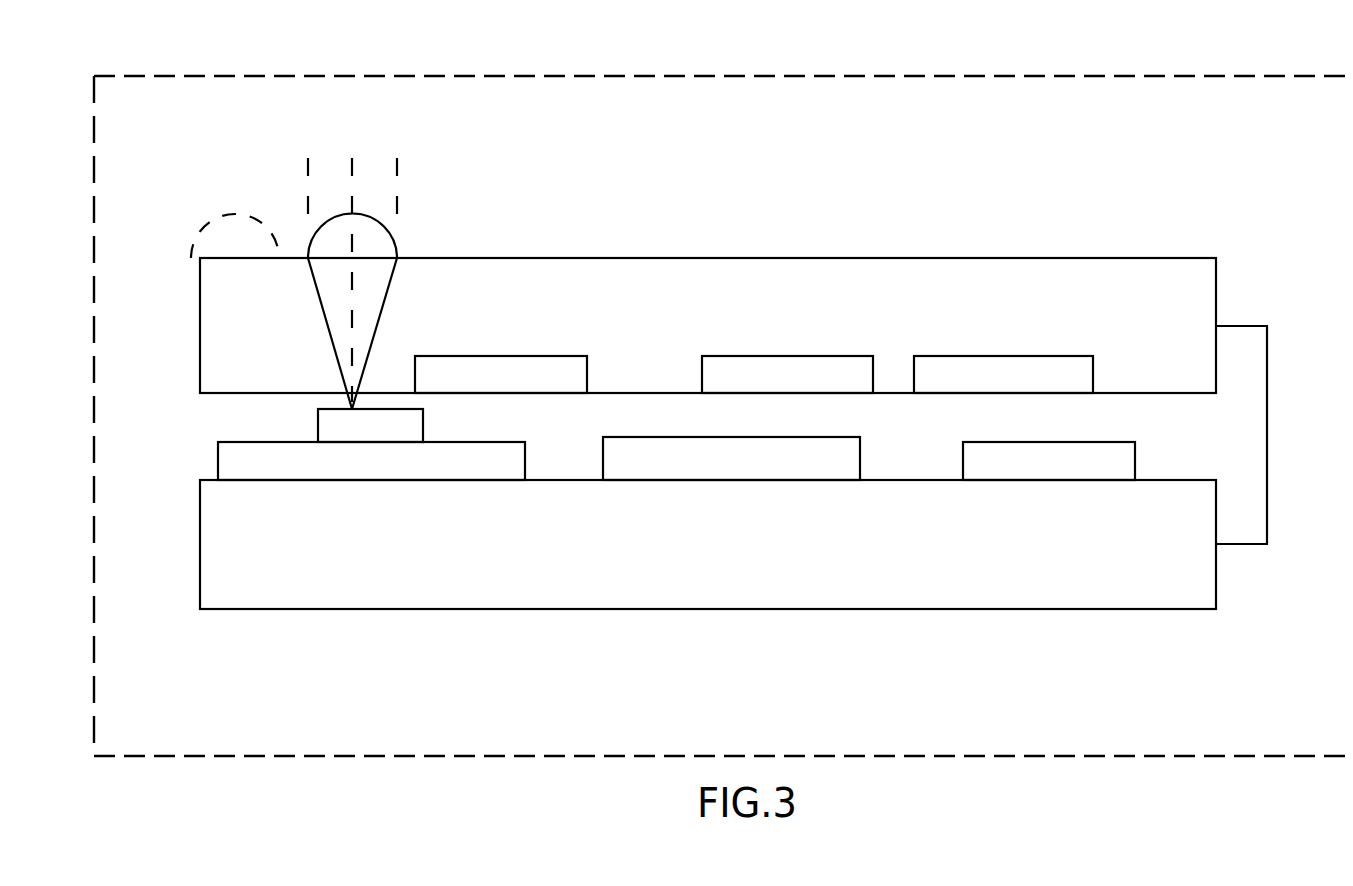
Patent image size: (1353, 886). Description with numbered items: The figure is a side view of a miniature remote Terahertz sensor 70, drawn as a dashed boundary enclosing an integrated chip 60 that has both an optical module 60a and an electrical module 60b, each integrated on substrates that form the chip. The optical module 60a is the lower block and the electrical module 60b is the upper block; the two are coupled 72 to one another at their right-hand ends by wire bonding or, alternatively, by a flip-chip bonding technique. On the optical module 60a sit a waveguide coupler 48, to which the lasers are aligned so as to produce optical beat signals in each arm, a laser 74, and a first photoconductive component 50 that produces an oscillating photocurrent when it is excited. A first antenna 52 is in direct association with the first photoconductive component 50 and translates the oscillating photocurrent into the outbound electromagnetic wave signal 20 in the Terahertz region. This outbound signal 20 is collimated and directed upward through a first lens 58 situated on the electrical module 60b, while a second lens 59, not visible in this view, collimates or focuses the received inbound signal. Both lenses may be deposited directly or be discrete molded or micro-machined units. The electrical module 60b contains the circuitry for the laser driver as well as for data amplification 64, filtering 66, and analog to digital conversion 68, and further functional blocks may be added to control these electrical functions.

The miniature remote sensor 70 is at (755, 76).
The lens 59 is at (201, 212).
The outbound electromagnetic wave signal 20 is at (398, 199).
The first lens 58 is at (387, 247).
The data amplification 64 is at (455, 356).
The filtering 66 is at (845, 356).
The analog to digital conversion 68 is at (1063, 356).
The first antenna 52 is at (423, 427).
The first photoconductive component 50 is at (525, 455).
The waveguide coupler 48 is at (860, 457).
The laser 74 is at (1135, 453).
The coupling 72 is at (1241, 326).
The integrated chip 60 is at (1245, 245).
The optical module 60a is at (282, 610).
The electrical module 60b is at (213, 393).